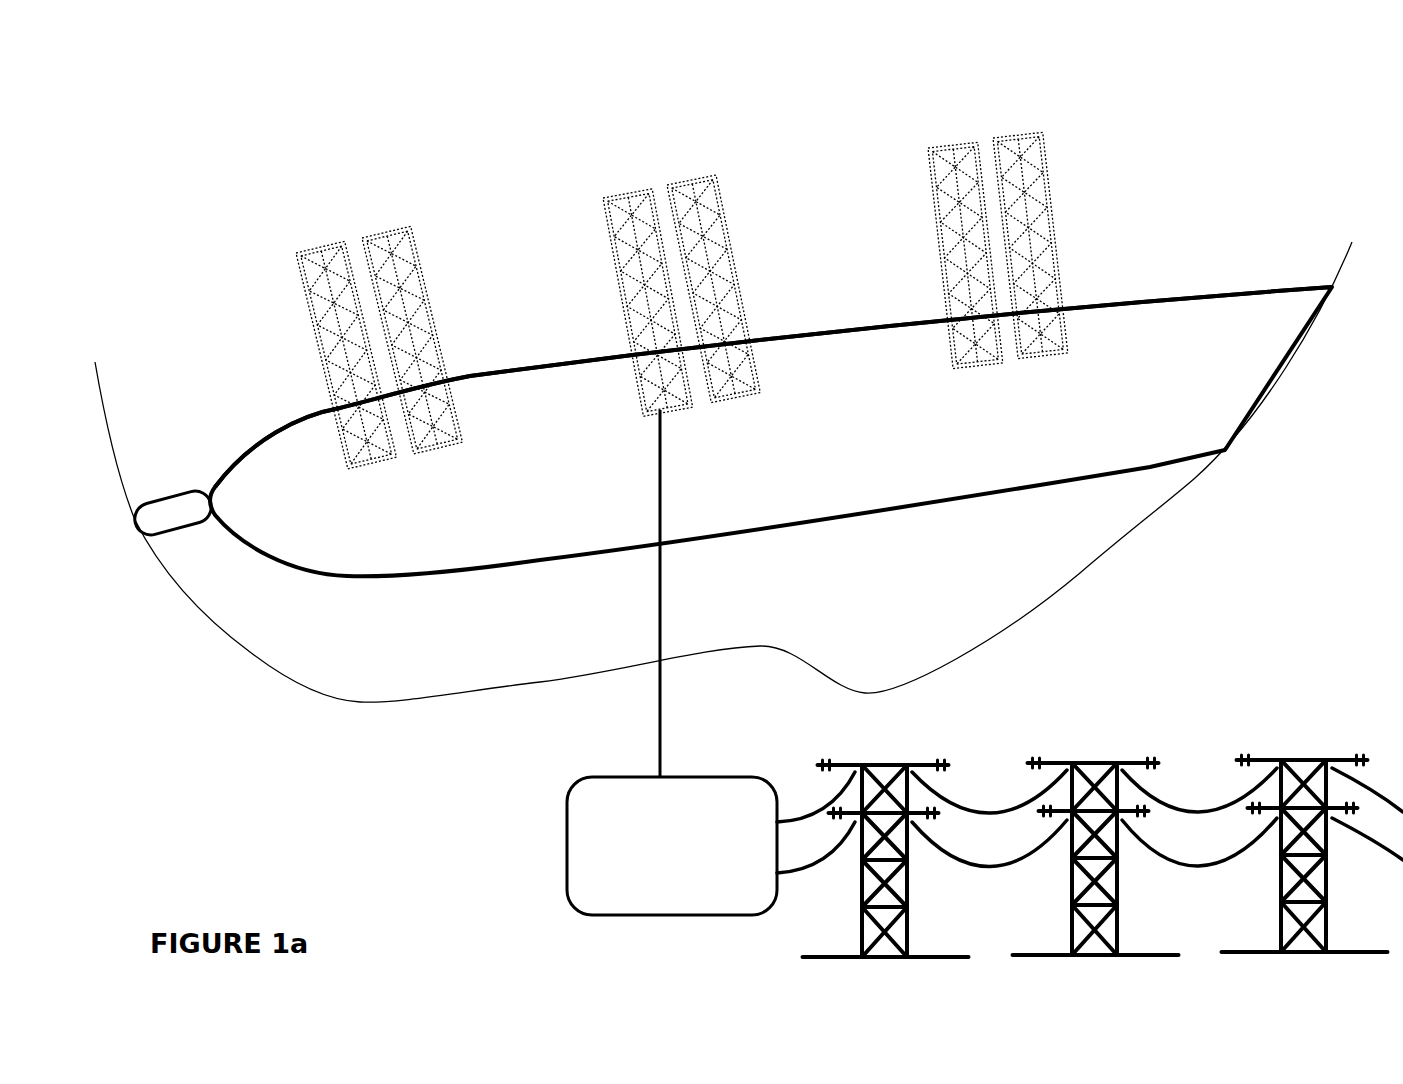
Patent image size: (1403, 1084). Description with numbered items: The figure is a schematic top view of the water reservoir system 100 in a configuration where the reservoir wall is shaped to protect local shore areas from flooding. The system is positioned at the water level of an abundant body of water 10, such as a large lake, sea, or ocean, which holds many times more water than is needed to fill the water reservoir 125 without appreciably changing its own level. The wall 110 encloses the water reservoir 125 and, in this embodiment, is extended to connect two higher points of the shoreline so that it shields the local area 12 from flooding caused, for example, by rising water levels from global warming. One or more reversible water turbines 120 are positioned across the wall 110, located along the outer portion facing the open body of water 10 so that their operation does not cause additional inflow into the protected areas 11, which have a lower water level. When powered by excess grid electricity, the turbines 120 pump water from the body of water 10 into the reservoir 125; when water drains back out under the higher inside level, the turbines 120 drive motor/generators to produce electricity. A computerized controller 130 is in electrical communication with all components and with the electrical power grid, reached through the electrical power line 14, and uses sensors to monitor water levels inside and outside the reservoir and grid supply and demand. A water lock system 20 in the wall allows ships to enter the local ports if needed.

The water reservoir system 100 is at (593, 108).
The abundant body of water 10 is at (1219, 129).
The protected areas 11 is at (877, 596).
The local area 12 is at (379, 789).
The electrical power line 14 is at (1192, 683).
The water lock system 20 is at (157, 498).
The wall 110 is at (437, 573).
The reversible water turbines 120 is at (420, 256).
The water reservoir 125 is at (846, 431).
The computerized controller 130 is at (644, 861).